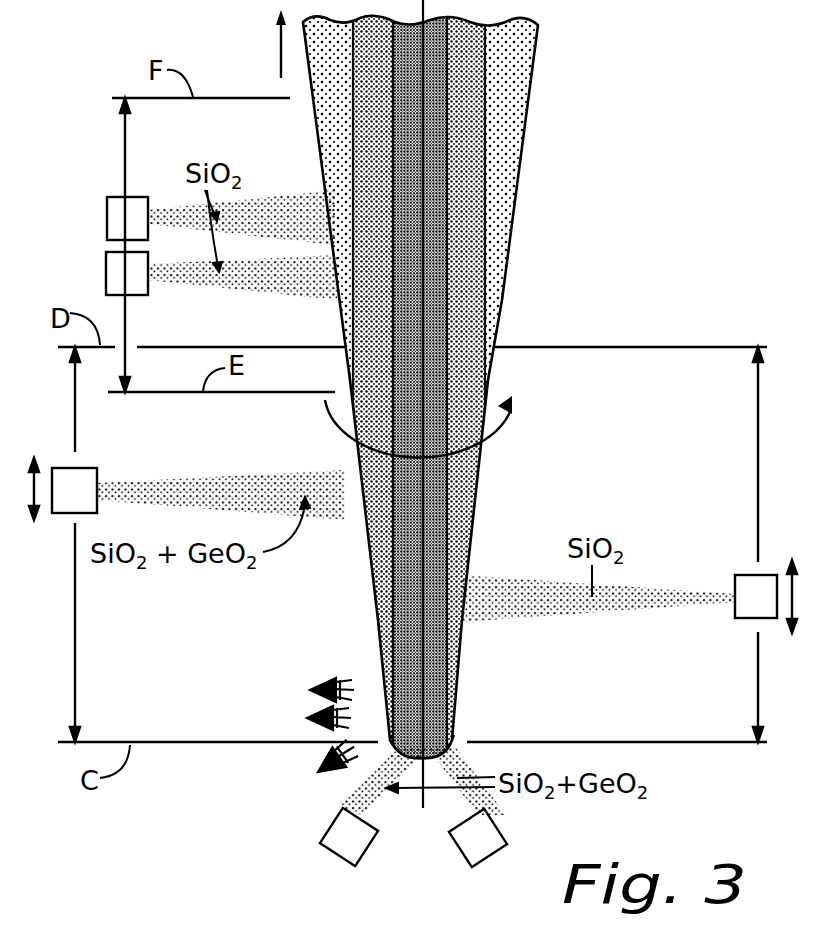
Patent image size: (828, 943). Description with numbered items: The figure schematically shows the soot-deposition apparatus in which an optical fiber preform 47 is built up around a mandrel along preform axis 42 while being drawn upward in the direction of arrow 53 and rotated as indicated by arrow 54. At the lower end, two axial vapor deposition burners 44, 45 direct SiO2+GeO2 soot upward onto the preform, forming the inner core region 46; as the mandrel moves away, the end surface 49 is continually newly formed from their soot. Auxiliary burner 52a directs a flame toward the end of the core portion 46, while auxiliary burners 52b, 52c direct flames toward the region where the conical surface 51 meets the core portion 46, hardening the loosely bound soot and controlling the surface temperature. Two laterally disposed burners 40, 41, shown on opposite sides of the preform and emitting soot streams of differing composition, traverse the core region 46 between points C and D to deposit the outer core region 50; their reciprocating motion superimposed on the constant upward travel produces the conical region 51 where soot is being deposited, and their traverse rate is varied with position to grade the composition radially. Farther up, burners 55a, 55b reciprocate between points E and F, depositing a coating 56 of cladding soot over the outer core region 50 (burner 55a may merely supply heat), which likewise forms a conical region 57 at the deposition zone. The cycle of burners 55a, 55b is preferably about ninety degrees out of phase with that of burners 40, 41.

The lateral burner 40 is at (85, 478).
The lateral burner 41 is at (752, 585).
The preform axis 42 is at (420, 802).
The axial vapor deposition burner 44 is at (497, 833).
The axial vapor deposition burner 45 is at (340, 833).
The inner core region 46 is at (433, 663).
The preform 47 is at (464, 390).
The end surface 49 is at (447, 750).
The outer core region 50 is at (490, 277).
The conical region 51 is at (476, 515).
The auxiliary burner 52a is at (318, 770).
The auxiliary burner 52b is at (310, 718).
The auxiliary burner 52c is at (322, 688).
The arrow 53 is at (281, 42).
The arrow 54 is at (515, 412).
The burner 55a is at (118, 216).
The burner 55b is at (118, 270).
The coating of cladding soot 56 is at (527, 97).
The conical region 57 is at (523, 167).